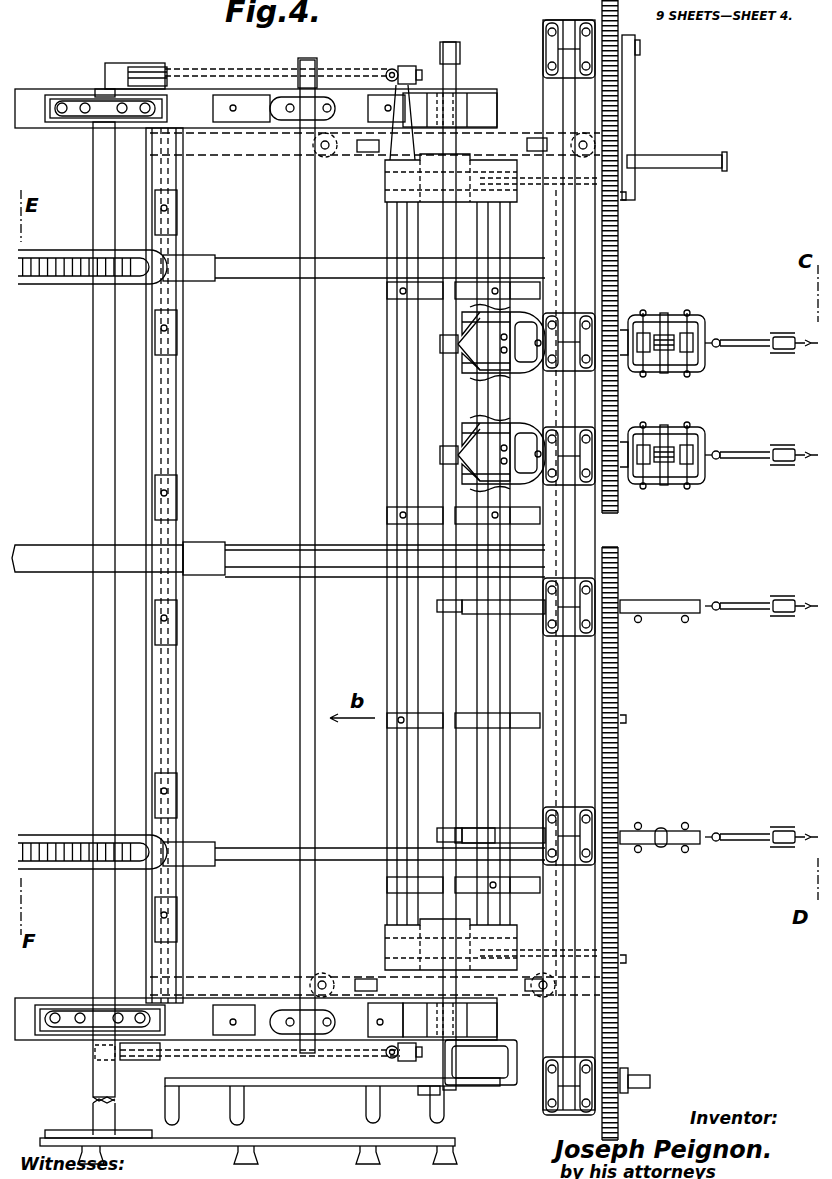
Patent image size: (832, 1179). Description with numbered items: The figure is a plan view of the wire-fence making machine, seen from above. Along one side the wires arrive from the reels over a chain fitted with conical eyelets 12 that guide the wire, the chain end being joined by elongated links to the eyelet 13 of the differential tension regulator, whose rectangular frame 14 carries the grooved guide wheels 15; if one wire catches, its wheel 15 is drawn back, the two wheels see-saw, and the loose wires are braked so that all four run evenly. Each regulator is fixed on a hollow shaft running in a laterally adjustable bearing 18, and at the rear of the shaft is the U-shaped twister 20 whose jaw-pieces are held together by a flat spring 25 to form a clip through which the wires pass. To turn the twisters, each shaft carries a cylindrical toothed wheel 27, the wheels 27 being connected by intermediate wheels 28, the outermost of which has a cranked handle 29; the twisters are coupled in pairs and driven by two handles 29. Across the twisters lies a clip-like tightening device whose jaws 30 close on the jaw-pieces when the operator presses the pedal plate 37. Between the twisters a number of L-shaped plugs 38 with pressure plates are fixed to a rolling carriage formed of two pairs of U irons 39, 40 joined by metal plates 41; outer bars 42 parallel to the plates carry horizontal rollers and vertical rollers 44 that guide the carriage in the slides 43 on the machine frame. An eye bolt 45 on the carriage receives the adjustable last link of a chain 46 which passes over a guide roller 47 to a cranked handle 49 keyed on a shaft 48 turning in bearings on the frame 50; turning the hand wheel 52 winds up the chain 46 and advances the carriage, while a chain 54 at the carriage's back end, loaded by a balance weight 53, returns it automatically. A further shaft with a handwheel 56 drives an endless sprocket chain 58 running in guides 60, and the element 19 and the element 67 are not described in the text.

The conical eyelets 12 is at (785, 335).
The eyelet 13 is at (705, 455).
The rectangular frame 14 is at (645, 325).
The grooved guide wheel 15 is at (682, 330).
The bearing 18 is at (585, 480).
The arm 19 is at (545, 485).
The twister 20 is at (525, 432).
The flat spring 25 is at (480, 422).
The cylindrical toothed wheel 27 is at (620, 410).
The intermediate wheel 28 is at (620, 245).
The cranked handle 29 is at (632, 93).
The jaws 30 is at (442, 652).
The pedal plate 37 is at (485, 1085).
The plugs 38 is at (520, 283).
The U irons 39 is at (410, 358).
The U irons 40 is at (482, 686).
The metal plate 41 is at (266, 551).
The outer bars 42 is at (315, 152).
The slides 43 is at (242, 148).
The vertical rollers 44 is at (338, 155).
The eye bolt 45 is at (404, 559).
The chain 46 is at (260, 560).
The guide roller 47 is at (276, 630).
The shaft 48 is at (300, 885).
The cranked handle 49 is at (262, 560).
The frame 50 is at (205, 672).
The hand wheel 52 is at (415, 1088).
The balance weight 53 is at (600, 940).
The chain 54 is at (528, 186).
The handwheel 56 is at (200, 1130).
The endless sprocket chain 58 is at (58, 870).
The guides 60 is at (78, 875).
The rod 67 is at (100, 1070).